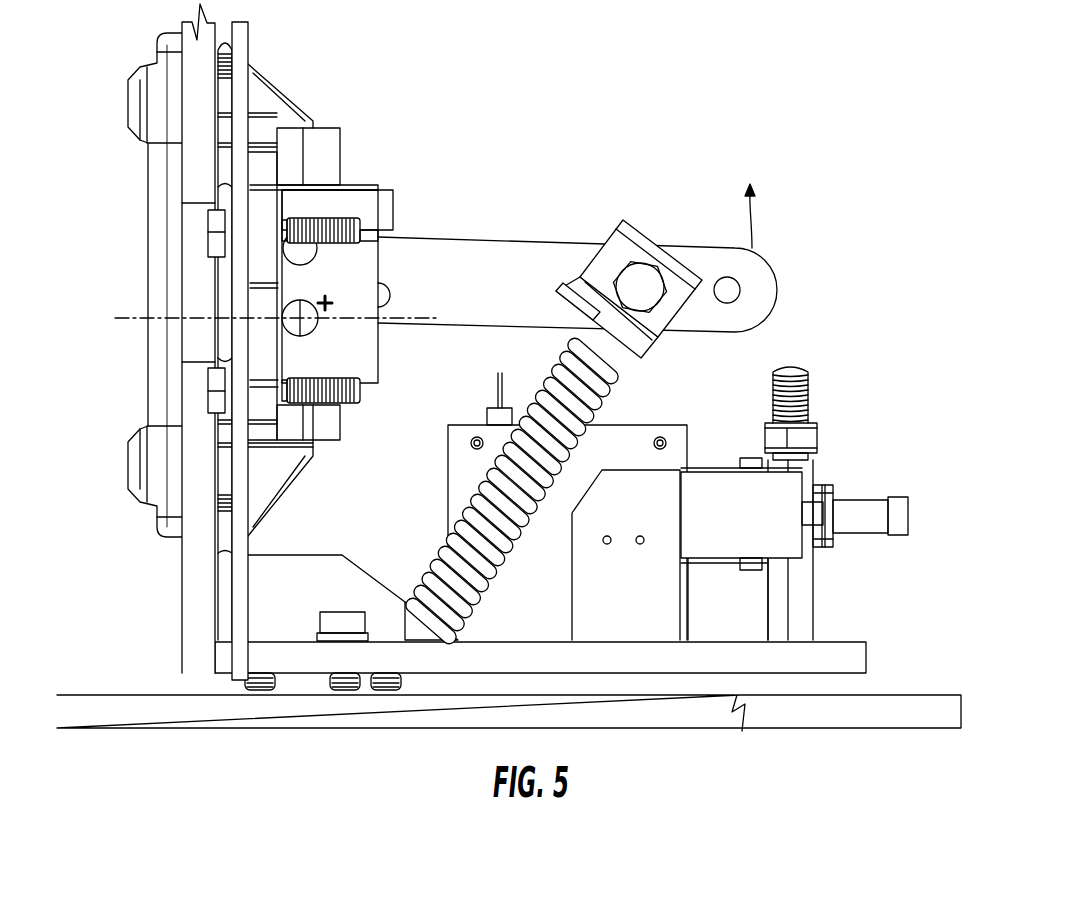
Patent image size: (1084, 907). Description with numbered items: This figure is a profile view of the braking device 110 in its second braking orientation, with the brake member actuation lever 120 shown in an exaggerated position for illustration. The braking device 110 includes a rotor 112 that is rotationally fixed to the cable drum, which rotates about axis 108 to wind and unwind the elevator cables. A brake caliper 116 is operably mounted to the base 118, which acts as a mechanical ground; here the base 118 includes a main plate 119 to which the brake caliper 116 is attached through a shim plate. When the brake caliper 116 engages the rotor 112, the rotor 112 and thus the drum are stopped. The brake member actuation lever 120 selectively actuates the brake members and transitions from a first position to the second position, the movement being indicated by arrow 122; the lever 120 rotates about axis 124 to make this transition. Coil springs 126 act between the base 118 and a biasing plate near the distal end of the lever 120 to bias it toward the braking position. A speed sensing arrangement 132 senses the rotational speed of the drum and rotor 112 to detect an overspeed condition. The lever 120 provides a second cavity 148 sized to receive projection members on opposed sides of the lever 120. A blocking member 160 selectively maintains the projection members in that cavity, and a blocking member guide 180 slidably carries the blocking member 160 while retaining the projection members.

The axis 108 is at (132, 317).
The braking device 110 is at (806, 232).
The rotor 112 is at (243, 535).
The brake caliper 116 is at (326, 146).
The base 118 is at (946, 674).
The main plate 119 is at (620, 710).
The brake member actuation lever 120 is at (495, 253).
The arrow 122 is at (332, 277).
The axis 124 is at (328, 305).
The coil springs 126 is at (546, 390).
The speed sensing arrangement 132 is at (96, 179).
The second cavity 148 is at (725, 288).
The blocking member 160 is at (720, 487).
The blocking member guide 180 is at (660, 577).